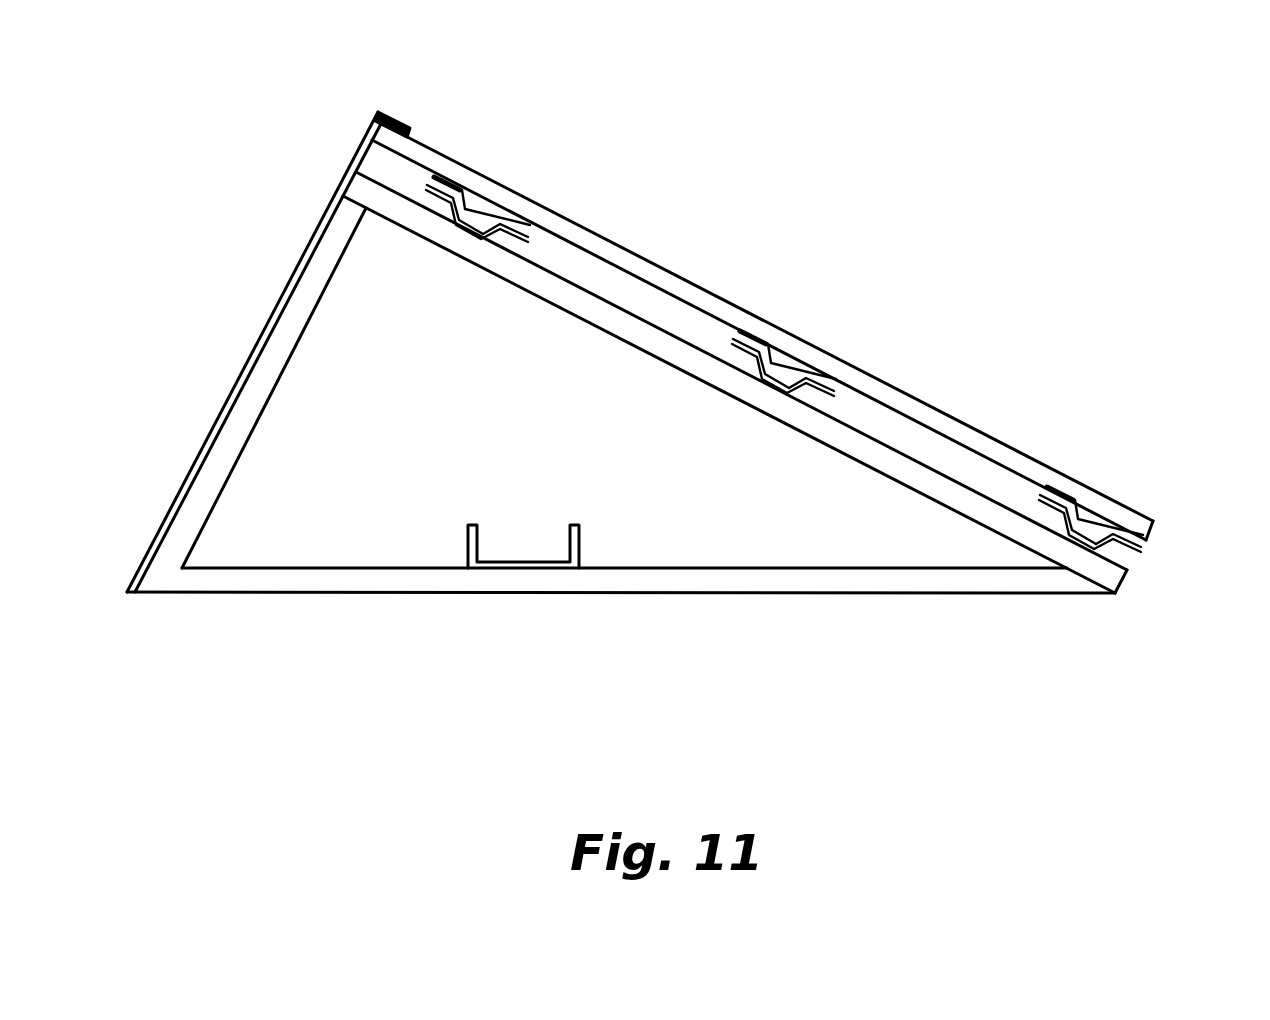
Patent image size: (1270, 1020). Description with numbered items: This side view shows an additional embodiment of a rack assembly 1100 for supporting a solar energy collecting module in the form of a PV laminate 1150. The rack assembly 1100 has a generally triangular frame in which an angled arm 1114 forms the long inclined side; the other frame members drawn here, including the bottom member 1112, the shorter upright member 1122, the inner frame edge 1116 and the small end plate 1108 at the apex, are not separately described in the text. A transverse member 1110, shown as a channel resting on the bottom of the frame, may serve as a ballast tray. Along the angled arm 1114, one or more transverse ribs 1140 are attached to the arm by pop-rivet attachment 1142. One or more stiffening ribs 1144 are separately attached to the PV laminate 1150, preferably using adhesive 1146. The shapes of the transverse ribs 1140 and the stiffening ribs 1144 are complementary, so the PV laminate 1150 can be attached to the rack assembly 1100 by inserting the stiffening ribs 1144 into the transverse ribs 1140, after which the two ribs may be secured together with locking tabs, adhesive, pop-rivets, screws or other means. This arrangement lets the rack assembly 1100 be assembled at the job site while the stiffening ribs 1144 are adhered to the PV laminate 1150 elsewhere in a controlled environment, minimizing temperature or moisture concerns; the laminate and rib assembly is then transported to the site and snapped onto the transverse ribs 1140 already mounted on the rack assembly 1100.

The rack assembly 1100 is at (672, 367).
The end plate 1108 is at (398, 120).
The transverse member 1110 is at (465, 548).
The bottom frame member 1112 is at (735, 578).
The angled arm 1114 is at (975, 510).
The inner frame edge 1116 is at (185, 537).
The upright frame member 1122 is at (255, 352).
The transverse rib 1140 is at (1135, 552).
The pop-rivet attachment 1142 is at (1083, 547).
The stiffening rib 1144 is at (1143, 542).
The adhesive 1146 is at (1123, 520).
The PV laminate 1150 is at (683, 287).